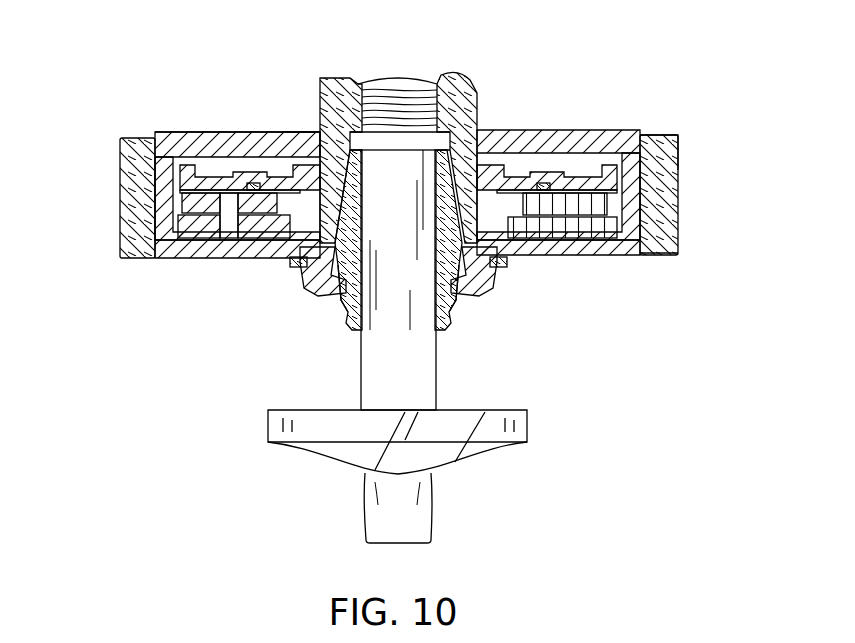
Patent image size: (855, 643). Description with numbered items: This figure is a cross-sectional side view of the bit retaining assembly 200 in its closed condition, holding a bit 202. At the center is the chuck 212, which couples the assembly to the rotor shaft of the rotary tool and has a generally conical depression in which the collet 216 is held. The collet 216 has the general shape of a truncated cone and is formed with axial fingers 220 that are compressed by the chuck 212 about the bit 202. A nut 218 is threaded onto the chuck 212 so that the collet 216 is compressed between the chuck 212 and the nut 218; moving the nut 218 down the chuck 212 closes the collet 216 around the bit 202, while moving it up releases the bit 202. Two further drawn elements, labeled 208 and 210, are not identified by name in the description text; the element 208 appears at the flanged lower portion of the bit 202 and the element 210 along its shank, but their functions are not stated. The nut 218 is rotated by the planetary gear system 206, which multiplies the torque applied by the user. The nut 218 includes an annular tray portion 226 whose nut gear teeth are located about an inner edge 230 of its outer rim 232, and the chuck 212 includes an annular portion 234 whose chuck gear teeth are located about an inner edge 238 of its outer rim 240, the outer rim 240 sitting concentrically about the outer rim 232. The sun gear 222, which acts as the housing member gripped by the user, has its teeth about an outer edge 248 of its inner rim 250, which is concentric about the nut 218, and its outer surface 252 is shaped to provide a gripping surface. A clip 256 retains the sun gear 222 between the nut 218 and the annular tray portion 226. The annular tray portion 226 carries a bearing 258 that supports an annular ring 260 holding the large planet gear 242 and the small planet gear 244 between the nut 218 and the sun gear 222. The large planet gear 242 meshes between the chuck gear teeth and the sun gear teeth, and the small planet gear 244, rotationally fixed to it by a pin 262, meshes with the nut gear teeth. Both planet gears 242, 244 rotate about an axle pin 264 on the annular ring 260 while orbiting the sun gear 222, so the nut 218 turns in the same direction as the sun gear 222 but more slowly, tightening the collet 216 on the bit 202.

The bit retaining assembly 200 is at (652, 261).
The bit 202 is at (432, 498).
The planetary gear system 206 is at (560, 228).
The flange 208 is at (522, 450).
The stem 210 is at (423, 387).
The chuck 212 is at (478, 93).
The collet 216 is at (457, 313).
The nut 218 is at (470, 305).
The axial fingers 220 is at (355, 318).
The sun gear 222 is at (680, 200).
The annular tray portion 226 is at (550, 172).
The inner edge 230 is at (625, 244).
The outer rim 232 is at (680, 145).
The annular portion 234 is at (200, 132).
The inner edge 238 is at (183, 245).
The outer rim 240 is at (173, 188).
The large planet gear 242 is at (298, 262).
The small planet gear 244 is at (220, 187).
The outer edge 248 is at (285, 132).
The inner rim 250 is at (330, 290).
The outer surface 252 is at (130, 160).
The clip 256 is at (483, 276).
The bearing 258 is at (243, 187).
The annular ring 260 is at (210, 185).
The pin 262 is at (238, 215).
The axle pin 264 is at (195, 240).